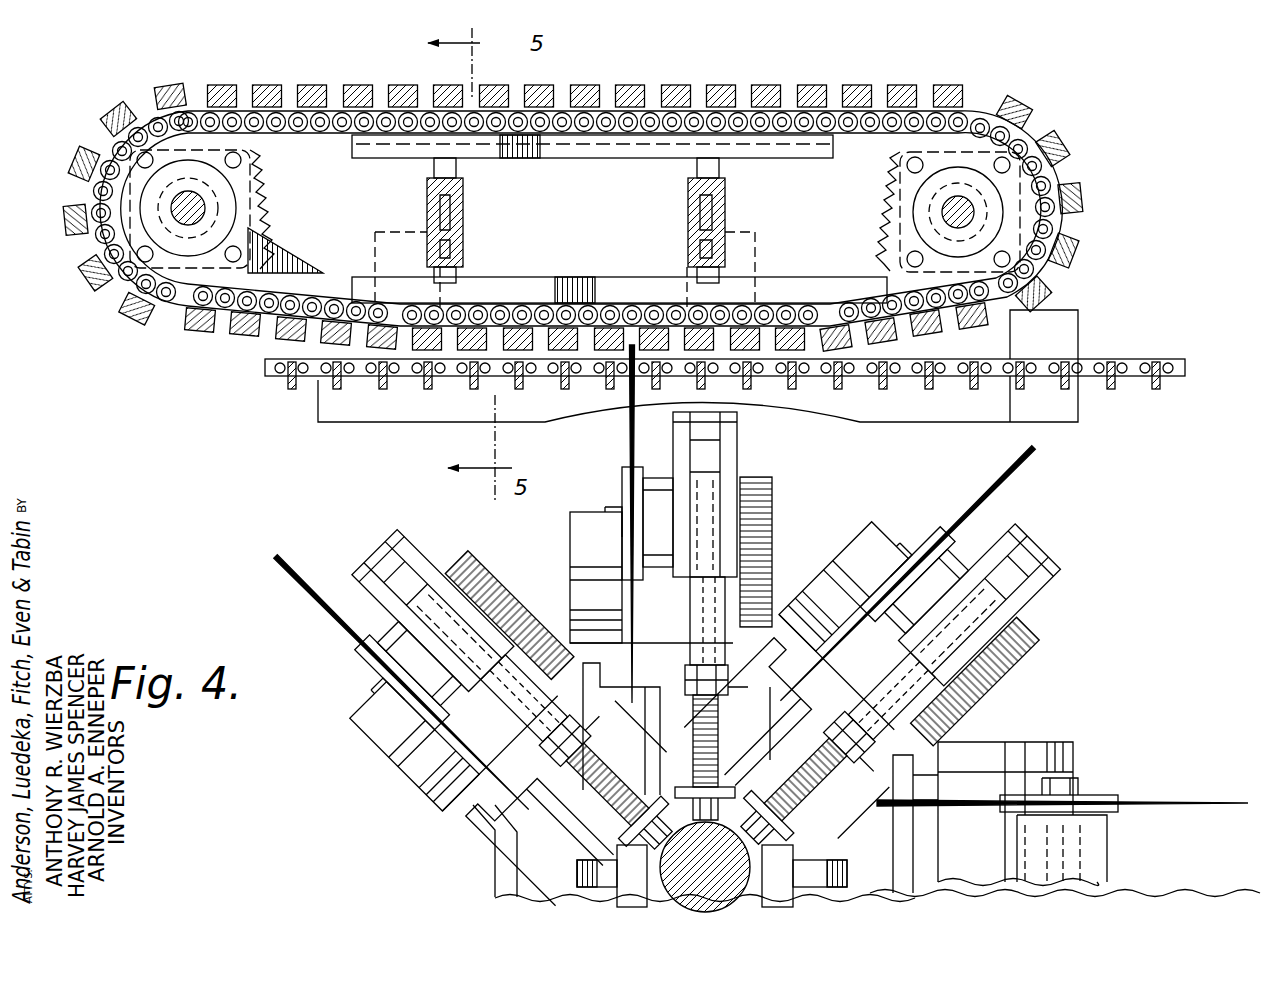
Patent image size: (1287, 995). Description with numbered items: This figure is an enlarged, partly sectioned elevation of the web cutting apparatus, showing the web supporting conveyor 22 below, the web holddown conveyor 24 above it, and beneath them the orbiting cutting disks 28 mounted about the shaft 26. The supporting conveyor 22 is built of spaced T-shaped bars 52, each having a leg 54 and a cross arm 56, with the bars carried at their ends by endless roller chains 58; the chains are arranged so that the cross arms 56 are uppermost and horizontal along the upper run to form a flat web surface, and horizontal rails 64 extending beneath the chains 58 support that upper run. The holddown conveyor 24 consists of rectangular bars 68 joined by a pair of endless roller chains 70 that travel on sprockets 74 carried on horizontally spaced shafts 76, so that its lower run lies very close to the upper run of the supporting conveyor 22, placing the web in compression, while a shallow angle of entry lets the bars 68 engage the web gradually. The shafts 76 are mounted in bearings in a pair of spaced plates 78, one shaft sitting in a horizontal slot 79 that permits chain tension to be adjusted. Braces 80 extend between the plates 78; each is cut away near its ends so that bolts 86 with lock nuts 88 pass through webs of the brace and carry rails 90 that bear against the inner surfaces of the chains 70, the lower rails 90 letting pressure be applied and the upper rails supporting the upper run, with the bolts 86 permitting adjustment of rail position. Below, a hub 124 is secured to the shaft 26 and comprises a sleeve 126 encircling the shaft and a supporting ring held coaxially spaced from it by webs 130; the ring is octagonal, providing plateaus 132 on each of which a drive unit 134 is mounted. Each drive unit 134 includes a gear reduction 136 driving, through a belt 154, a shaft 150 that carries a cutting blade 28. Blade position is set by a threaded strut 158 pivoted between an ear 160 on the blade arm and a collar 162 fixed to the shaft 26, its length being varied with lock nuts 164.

The web supporting conveyor 22 is at (1180, 352).
The web holddown conveyor 24 is at (993, 72).
The shaft 26 is at (742, 861).
The cutting disk 28 is at (629, 431).
The bar 52 is at (1102, 356).
The leg 54 is at (337, 392).
The cross arm 56 is at (1055, 358).
The endless roller chain 58 is at (264, 369).
The rail 64 is at (346, 423).
The bar 68 is at (822, 84).
The endless roller chain 70 is at (1050, 172).
The sprocket 74 is at (236, 214).
The shaft 76 is at (262, 234).
The plate 78 is at (350, 145).
The slot 79 is at (75, 193).
The brace 80 is at (463, 190).
The bolt 86 is at (456, 163).
The lock nut 88 is at (434, 166).
The rail 90 is at (590, 160).
The hub 124 is at (455, 822).
The sleeve 126 is at (650, 900).
The web 130 is at (497, 840).
The plateau 132 is at (572, 590).
The drive unit 134 is at (781, 456).
The gear reduction 136 is at (736, 598).
The shaft 150 is at (623, 500).
The belt 154 is at (772, 528).
The strut 158 is at (776, 772).
The ear 160 is at (1043, 540).
The collar 162 is at (778, 835).
The lock nut 164 is at (686, 688).